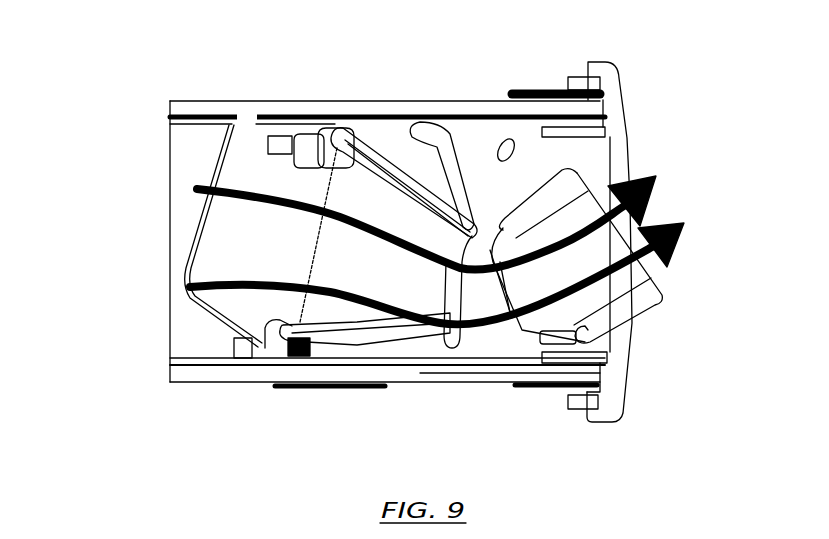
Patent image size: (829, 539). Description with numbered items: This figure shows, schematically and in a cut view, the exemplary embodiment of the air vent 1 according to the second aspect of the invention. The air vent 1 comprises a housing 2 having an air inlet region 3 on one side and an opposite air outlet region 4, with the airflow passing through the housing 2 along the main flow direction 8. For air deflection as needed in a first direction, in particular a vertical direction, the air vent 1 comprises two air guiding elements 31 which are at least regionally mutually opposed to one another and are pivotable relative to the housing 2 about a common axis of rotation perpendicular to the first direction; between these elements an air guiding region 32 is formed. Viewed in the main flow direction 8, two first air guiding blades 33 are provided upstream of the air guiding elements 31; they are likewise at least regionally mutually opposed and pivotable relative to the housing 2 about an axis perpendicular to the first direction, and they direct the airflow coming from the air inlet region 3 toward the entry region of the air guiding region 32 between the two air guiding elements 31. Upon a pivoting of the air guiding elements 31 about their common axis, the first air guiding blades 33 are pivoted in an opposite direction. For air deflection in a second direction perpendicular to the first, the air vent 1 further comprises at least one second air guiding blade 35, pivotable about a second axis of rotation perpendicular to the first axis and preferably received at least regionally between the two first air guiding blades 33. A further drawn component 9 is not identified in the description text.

The air vent 1 is at (259, 36).
The housing 2 is at (230, 110).
The air inlet region 3 is at (110, 236).
The air outlet region 4 is at (703, 205).
The main flow direction 8 is at (398, 58).
The front frame / bezel 9 is at (618, 117).
The air guiding elements 31 is at (573, 187).
The air guiding region 32 is at (523, 284).
The first air guiding blades 33 is at (400, 169).
The second air guiding blade 35 is at (232, 227).